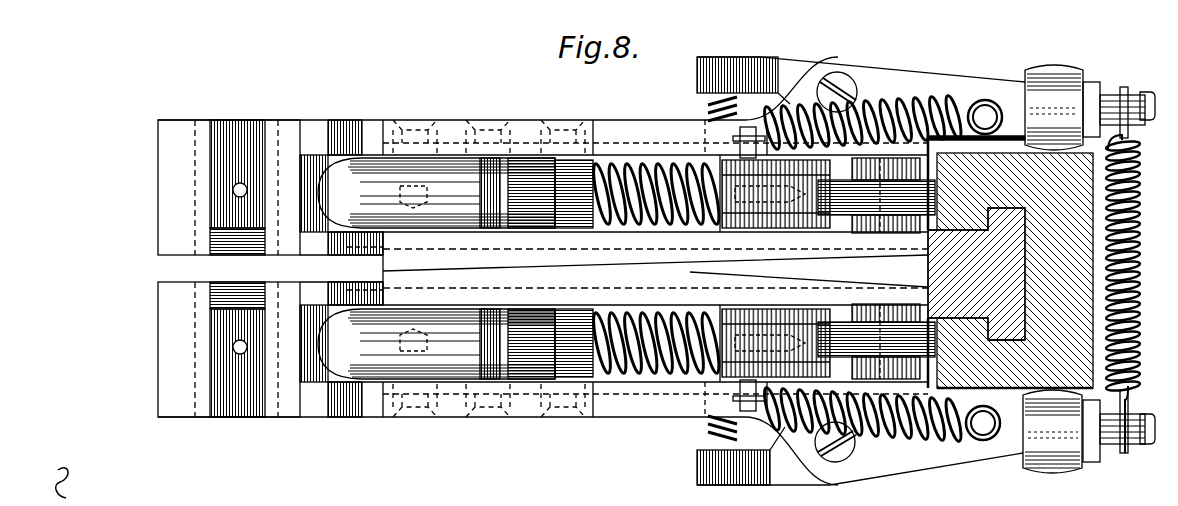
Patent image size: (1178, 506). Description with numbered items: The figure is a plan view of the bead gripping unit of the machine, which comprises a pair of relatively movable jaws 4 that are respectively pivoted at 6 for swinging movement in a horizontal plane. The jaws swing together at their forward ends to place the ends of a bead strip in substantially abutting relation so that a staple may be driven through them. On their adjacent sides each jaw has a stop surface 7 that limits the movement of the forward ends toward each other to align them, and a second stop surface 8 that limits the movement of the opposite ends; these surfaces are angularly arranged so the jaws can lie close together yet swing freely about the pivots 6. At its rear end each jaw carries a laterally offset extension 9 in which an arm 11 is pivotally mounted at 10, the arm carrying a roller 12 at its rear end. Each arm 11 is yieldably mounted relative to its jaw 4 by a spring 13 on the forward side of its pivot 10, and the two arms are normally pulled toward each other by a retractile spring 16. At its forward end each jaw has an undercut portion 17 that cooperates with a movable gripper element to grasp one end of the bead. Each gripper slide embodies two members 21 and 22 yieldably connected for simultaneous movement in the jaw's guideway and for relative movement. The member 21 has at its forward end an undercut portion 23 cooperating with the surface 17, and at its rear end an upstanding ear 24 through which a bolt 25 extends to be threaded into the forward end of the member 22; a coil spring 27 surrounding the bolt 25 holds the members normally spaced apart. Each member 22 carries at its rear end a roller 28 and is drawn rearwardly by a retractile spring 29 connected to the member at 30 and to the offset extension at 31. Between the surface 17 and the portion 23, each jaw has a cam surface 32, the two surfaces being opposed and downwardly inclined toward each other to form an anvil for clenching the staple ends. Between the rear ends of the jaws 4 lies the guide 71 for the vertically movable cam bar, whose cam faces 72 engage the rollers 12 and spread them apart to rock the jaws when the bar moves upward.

The jaw 4 is at (545, 120).
The pivot 6 is at (606, 160).
The stop surface 7 is at (474, 268).
The second stop surface 8 is at (861, 286).
The laterally offset extension 9 is at (870, 66).
The pivot 10 is at (838, 460).
The arm 11 is at (755, 66).
The roller 12 is at (1048, 462).
The spring 13 is at (707, 107).
The retractile spring 16 is at (1140, 262).
The undercut portion 17 is at (195, 228).
The member 21 is at (338, 240).
The member 22 is at (754, 231).
The undercut portion 23 is at (292, 248).
The upstanding ear 24 is at (572, 160).
The bolt 25 is at (480, 210).
The coil spring 27 is at (647, 228).
The roller 28 is at (855, 178).
The retractile spring 29 is at (936, 100).
The spring connection 30 is at (735, 402).
The spring connection 31 is at (983, 430).
The cam surface 32 is at (222, 280).
The guide 71 is at (942, 272).
The cam face 72 is at (1093, 320).